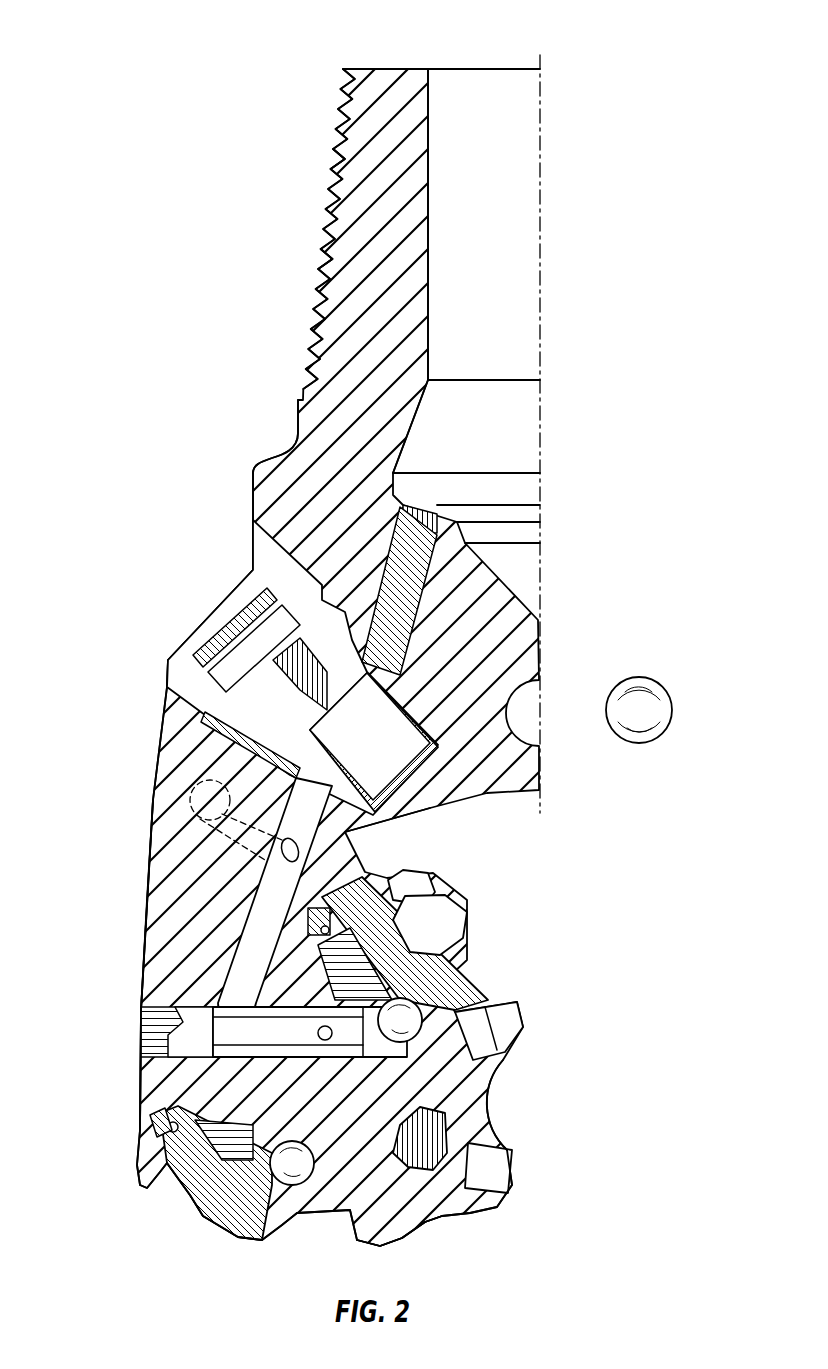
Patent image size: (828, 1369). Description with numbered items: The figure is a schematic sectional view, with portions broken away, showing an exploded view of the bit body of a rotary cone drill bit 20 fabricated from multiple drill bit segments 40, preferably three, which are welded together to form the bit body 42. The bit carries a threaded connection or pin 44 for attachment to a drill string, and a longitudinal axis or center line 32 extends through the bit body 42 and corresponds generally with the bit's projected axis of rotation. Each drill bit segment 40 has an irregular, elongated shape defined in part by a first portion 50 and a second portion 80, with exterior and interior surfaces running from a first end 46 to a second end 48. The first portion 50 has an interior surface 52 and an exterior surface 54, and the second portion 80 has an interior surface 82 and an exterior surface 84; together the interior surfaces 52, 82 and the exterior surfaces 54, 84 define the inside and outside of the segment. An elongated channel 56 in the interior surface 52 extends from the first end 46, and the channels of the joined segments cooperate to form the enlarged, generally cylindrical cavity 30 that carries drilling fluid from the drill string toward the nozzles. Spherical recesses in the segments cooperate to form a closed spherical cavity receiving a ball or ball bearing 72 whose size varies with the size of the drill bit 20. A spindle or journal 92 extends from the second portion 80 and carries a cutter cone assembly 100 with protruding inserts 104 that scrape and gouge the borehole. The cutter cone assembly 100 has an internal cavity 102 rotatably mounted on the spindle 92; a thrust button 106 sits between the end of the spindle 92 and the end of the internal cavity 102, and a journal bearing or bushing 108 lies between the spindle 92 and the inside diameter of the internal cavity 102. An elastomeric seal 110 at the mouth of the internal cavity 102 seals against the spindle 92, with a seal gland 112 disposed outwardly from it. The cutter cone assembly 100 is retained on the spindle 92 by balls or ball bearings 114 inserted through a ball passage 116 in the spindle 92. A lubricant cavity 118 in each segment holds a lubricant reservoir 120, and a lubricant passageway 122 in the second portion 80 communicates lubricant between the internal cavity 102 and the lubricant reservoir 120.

The rotary cone drill bit 20 is at (177, 366).
The enlarged cylindrical cavity 30 is at (495, 114).
The longitudinal axis 32 is at (543, 178).
The drill bit segment 40 is at (345, 222).
The bit body 42 is at (145, 806).
The threaded connection 44 is at (331, 150).
The first end 46 is at (383, 69).
The second end 48 is at (145, 1122).
The first portion 50 is at (333, 297).
The interior surface of first portion 52 is at (416, 416).
The exterior surface of first portion 54 is at (292, 437).
The elongated channel 56 is at (430, 88).
The ball bearing 72 is at (650, 741).
The second portion 80 is at (156, 880).
The interior surface of second portion 82 is at (345, 878).
The exterior surface of second portion 84 is at (142, 918).
The spindle 92 is at (497, 1082).
The cutter cone assembly 100 is at (545, 1190).
The internal cavity 102 is at (393, 1208).
The inserts 104 is at (525, 1010).
The thrust button 106 is at (425, 1142).
The journal bearing 108 is at (365, 968).
The elastomeric seal 110 is at (322, 933).
The seal gland 112 is at (150, 1120).
The ball bearings 114 is at (412, 1016).
The ball passage 116 is at (163, 1148).
The lubricant cavity 118 is at (437, 740).
The lubricant reservoir 120 is at (425, 700).
The lubricant passageway 122 is at (300, 805).